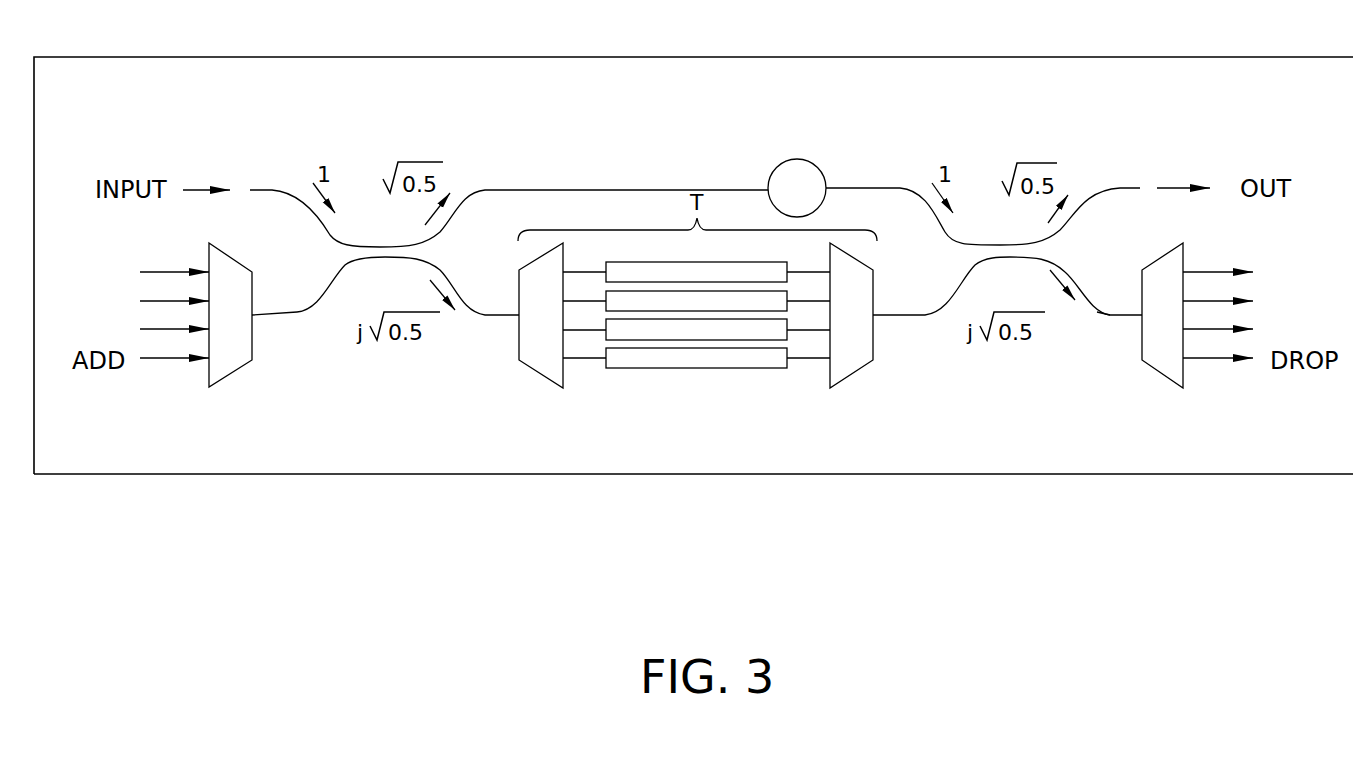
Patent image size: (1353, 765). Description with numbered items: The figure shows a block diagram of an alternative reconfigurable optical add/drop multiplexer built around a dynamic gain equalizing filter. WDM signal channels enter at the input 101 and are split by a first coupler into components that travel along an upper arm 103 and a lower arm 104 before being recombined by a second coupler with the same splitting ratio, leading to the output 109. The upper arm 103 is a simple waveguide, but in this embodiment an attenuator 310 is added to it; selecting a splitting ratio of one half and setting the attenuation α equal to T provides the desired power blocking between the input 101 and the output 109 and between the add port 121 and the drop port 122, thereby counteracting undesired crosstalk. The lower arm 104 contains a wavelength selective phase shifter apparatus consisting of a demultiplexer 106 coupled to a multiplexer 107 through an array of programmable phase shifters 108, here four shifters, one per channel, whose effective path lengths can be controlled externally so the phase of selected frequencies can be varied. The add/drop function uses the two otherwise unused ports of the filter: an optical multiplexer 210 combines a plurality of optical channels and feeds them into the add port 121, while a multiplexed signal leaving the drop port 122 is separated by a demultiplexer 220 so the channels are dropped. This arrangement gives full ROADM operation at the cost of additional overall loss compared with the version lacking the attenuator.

The left port 101 is at (278, 190).
The upper arm 103 is at (568, 190).
The lower arm 104 is at (881, 315).
The demultiplexer 106 is at (533, 368).
The multiplexer 107 is at (847, 372).
The array of programmable phase shifters 108 is at (683, 370).
The output 109 is at (1118, 187).
The add port 121 is at (303, 305).
The drop port 122 is at (1097, 310).
The optical multiplexer 210 is at (243, 367).
The demultiplexer 220 is at (1152, 368).
The attenuator 310 is at (818, 160).